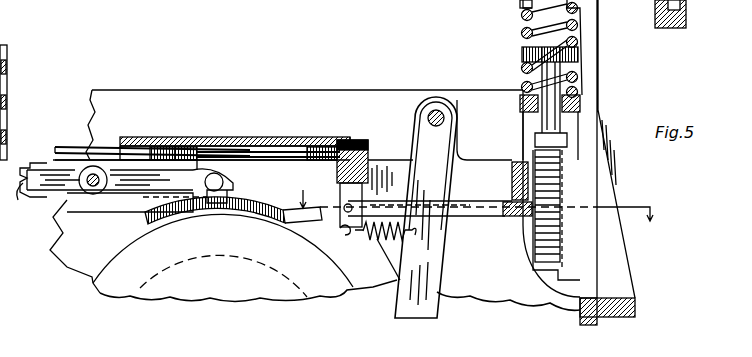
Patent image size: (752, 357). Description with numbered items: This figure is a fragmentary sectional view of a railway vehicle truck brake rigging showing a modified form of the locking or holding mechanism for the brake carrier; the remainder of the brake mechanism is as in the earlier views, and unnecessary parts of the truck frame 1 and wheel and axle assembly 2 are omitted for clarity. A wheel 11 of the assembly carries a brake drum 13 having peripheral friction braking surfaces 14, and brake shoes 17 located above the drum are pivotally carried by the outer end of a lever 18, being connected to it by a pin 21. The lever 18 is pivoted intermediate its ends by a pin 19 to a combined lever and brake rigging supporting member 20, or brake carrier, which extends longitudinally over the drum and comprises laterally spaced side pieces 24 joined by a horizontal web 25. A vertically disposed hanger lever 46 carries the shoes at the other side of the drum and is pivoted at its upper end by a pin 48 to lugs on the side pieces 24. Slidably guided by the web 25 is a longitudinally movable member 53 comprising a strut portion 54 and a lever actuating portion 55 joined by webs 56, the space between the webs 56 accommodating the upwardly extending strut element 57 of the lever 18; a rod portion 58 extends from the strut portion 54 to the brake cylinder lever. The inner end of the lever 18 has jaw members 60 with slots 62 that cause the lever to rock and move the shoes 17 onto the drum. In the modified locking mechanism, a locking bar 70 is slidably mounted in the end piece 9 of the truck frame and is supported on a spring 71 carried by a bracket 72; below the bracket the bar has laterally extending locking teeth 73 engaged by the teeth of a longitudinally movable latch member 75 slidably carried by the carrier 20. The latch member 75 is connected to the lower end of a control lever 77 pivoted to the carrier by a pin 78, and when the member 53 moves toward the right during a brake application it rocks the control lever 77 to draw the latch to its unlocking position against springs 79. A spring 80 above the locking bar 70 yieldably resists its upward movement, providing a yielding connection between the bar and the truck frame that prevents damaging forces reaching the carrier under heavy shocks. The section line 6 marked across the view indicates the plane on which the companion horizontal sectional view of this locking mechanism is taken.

The truck frame 1 is at (4, 75).
The wheel and axle assembly 2 is at (62, 253).
The section line 6- 6 is at (477, 218).
The end piece 9 is at (637, 307).
The wheel 11 is at (63, 238).
The brake drum 13 is at (107, 293).
The peripheral friction braking surface 14 is at (100, 267).
The brake shoe 17 is at (235, 219).
The lever 18 is at (50, 163).
The pin 19 is at (95, 170).
The combined lever and brake rigging supporting member 20 is at (490, 167).
The pin 21 is at (215, 213).
The side piece 24 is at (385, 160).
The web 25 is at (297, 140).
The hanger lever 46 is at (432, 115).
The pin 48 is at (441, 110).
The longitudinally movable member 53 is at (158, 148).
The strut portion 54 is at (177, 148).
The lever actuating portion 55 is at (317, 148).
The web 56 is at (227, 147).
The strut element 57 is at (203, 147).
The rod portion 58 is at (68, 147).
The jaw member 60 is at (45, 168).
The slot 62 is at (30, 202).
The locking bar 70 is at (548, 140).
The spring 71 is at (577, 78).
The bracket 72 is at (518, 108).
The locking teeth 73 is at (550, 207).
The latch member 75 is at (488, 220).
The control lever 77 is at (340, 173).
The pin 78 is at (353, 140).
The spring 79 is at (390, 238).
The spring 80 is at (582, 24).